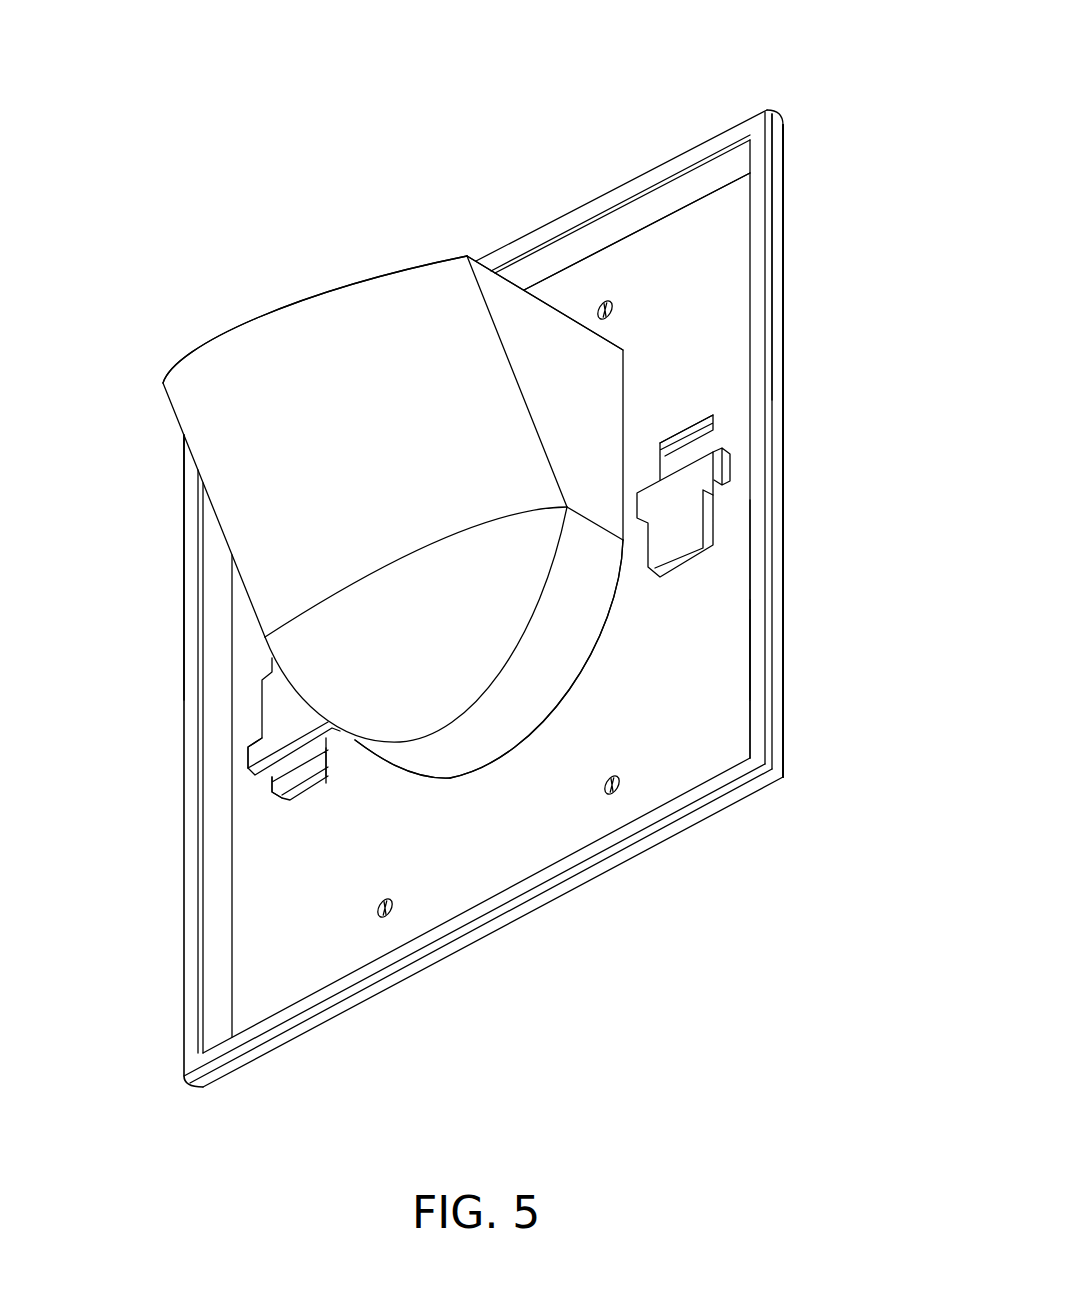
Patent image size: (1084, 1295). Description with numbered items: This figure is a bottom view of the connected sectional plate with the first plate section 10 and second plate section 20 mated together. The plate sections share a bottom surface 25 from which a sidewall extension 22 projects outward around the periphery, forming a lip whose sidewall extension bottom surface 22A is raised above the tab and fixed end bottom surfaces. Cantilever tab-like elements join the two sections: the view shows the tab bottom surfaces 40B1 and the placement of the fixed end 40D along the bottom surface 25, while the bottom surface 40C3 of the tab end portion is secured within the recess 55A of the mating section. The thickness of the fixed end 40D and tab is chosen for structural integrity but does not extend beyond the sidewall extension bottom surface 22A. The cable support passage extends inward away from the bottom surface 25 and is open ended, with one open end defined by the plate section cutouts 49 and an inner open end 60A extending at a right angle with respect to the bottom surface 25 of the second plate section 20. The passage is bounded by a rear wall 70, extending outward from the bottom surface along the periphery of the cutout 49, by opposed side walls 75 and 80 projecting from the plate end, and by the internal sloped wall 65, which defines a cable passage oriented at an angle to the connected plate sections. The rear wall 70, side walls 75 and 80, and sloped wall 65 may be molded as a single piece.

The first plate section 10 is at (752, 835).
The second plate section 20 is at (802, 300).
The sidewall extension 22 is at (780, 226).
The sidewall extension bottom surface 22A is at (758, 636).
The bottom surface 25 is at (700, 237).
The tab bottom surface 40B1 is at (678, 538).
The bottom surface of end portion 40C3 is at (700, 448).
The fixed end 40D is at (730, 465).
The cutout 49 is at (485, 763).
The recess 55A is at (698, 410).
The inner open end 60A is at (262, 262).
The sloped wall 65 is at (402, 322).
The rear wall 70 is at (563, 653).
The side wall 75 is at (156, 535).
The side wall 80 is at (548, 337).